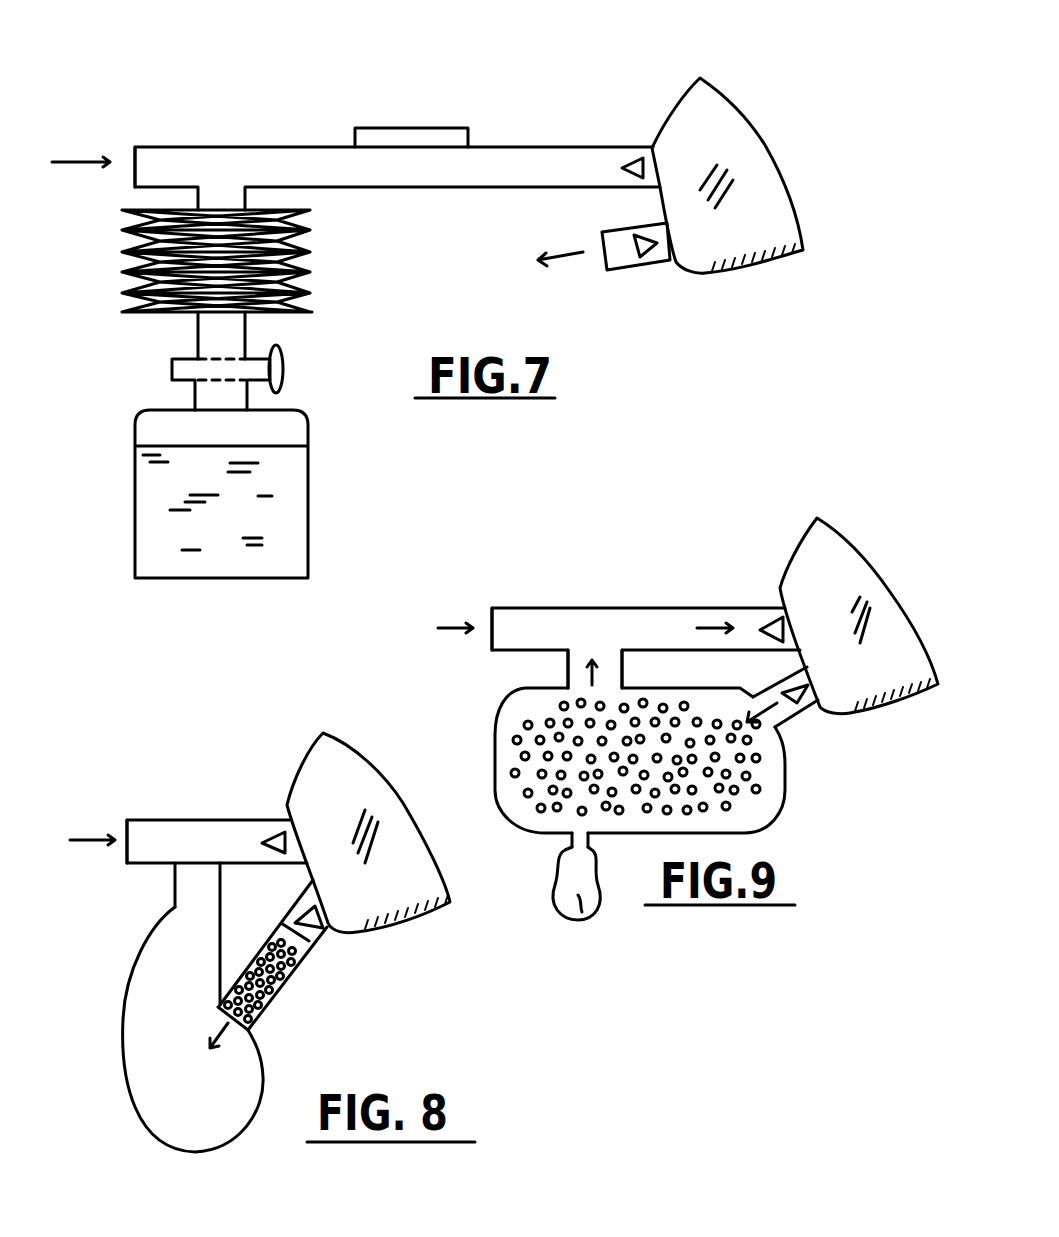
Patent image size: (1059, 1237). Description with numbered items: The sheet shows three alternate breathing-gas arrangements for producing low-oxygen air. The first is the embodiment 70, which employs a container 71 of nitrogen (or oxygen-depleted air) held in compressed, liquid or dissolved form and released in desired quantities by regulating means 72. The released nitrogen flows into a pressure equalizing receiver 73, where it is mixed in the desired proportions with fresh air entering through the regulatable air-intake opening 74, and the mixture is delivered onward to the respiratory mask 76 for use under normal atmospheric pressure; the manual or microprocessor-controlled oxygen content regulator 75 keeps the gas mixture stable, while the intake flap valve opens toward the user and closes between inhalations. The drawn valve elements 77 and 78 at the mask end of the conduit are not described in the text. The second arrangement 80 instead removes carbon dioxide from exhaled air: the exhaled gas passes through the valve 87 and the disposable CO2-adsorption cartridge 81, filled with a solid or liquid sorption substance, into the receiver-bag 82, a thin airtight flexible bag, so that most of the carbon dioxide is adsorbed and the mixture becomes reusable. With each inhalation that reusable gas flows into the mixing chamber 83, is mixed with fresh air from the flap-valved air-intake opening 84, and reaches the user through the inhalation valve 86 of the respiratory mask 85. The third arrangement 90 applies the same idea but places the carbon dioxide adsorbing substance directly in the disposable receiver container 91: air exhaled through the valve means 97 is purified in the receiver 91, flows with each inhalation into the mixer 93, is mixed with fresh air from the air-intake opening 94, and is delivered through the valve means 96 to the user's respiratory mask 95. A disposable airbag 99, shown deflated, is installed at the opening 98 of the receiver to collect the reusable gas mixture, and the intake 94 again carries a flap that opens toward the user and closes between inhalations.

In FIG. 7, the embodiment 70 is at (299, 78).
In FIG. 7, the container 71 is at (258, 530).
In FIG. 7, the regulating means 72 is at (258, 370).
In FIG. 7, the pressure equalizing receiver 73 is at (297, 273).
In FIG. 7, the air-intake opening 74 is at (135, 155).
In FIG. 7, the oxygen content regulator 75 is at (418, 92).
In FIG. 7, the respiratory mask 76 is at (683, 118).
In FIG. 7, the outlet check valve 77 is at (633, 160).
In FIG. 7, the return conduit 78 is at (646, 247).
In FIG. 8, the dispensing system 80 is at (200, 748).
In FIG. 8, the CO2-adsorption cartridge 81 is at (273, 980).
In FIG. 8, the receiver-bag 82 is at (227, 1098).
In FIG. 8, the mixing chamber 83 is at (197, 845).
In FIG. 8, the air-intake opening 84 is at (128, 850).
In FIG. 8, the respiratory mask 85 is at (343, 773).
In FIG. 8, the inhalation valve 86 is at (262, 847).
In FIG. 8, the valve 87 is at (322, 932).
In FIG. 9, the dispensing system 90 is at (684, 544).
In FIG. 9, the receiver container 91 is at (717, 788).
In FIG. 9, the mixer 93 is at (590, 637).
In FIG. 9, the air-intake opening 94 is at (490, 617).
In FIG. 9, the respiratory mask 95 is at (825, 550).
In FIG. 9, the valve means 96 is at (767, 627).
In FIG. 9, the valve means 97 is at (803, 705).
In FIG. 9, the opening 98 is at (572, 850).
In FIG. 9, the disposable airbag 99 is at (580, 912).